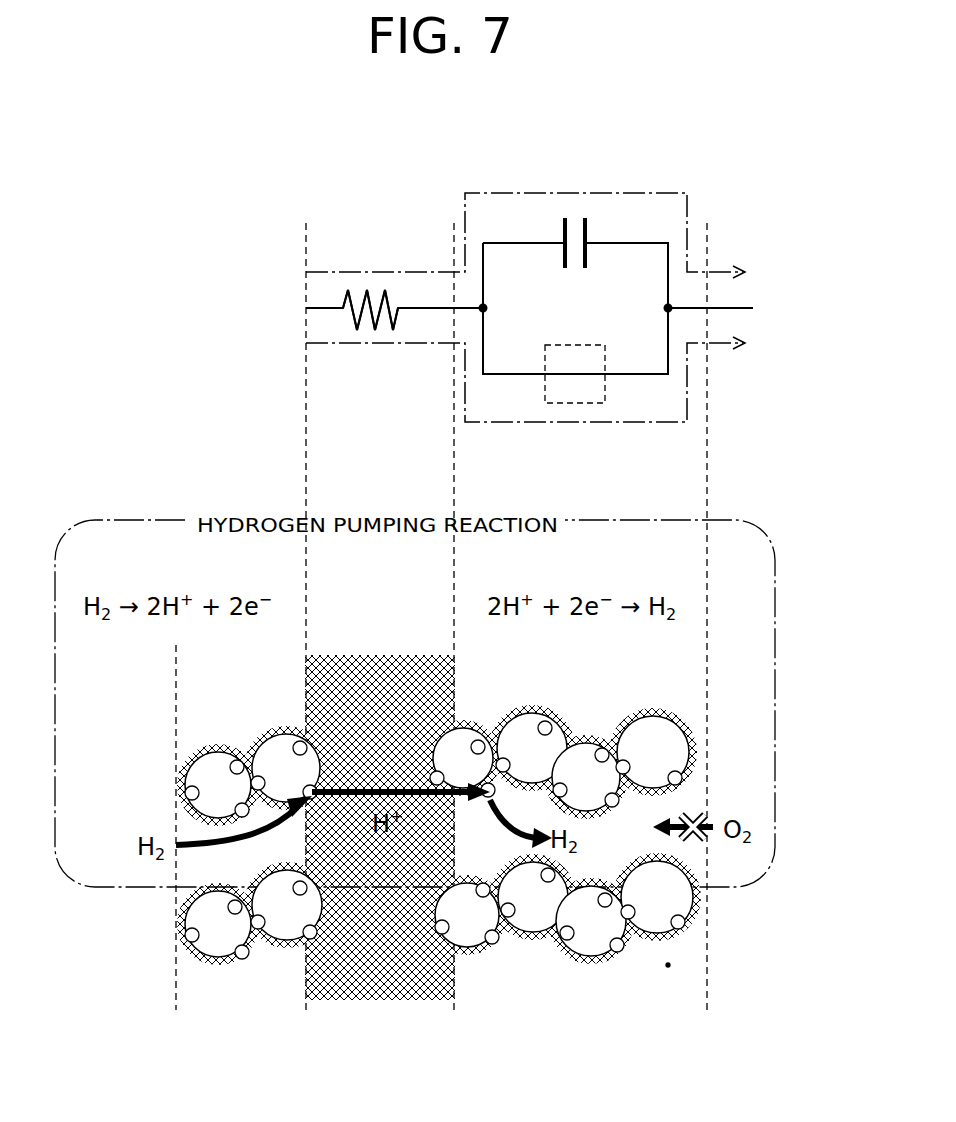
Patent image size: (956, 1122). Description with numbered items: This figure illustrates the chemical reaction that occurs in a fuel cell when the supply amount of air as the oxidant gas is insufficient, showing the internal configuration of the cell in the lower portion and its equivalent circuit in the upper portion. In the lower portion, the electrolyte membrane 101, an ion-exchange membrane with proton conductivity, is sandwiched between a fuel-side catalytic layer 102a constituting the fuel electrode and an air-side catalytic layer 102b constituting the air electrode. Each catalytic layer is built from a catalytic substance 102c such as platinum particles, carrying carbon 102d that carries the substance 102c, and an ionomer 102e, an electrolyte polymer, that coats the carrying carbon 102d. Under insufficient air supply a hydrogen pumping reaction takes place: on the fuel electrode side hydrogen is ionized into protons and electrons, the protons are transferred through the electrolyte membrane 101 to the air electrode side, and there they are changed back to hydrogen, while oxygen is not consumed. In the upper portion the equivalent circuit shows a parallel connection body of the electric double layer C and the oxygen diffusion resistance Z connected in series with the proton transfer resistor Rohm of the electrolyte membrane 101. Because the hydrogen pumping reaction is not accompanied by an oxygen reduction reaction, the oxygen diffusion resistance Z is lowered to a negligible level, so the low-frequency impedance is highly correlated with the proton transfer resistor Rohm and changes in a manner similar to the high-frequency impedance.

The electrolyte membrane 101 is at (455, 1011).
The fuel-side catalytic layer 102a is at (305, 1011).
The air-side catalytic layer 102b is at (625, 884).
The substance 102c is at (688, 922).
The carrying carbon 102d is at (677, 898).
The ionomer 102e is at (743, 971).
The electric double layer C is at (560, 237).
The oxygen diffusion resistance Z is at (567, 407).
The proton transfer resistor Rohm is at (350, 290).